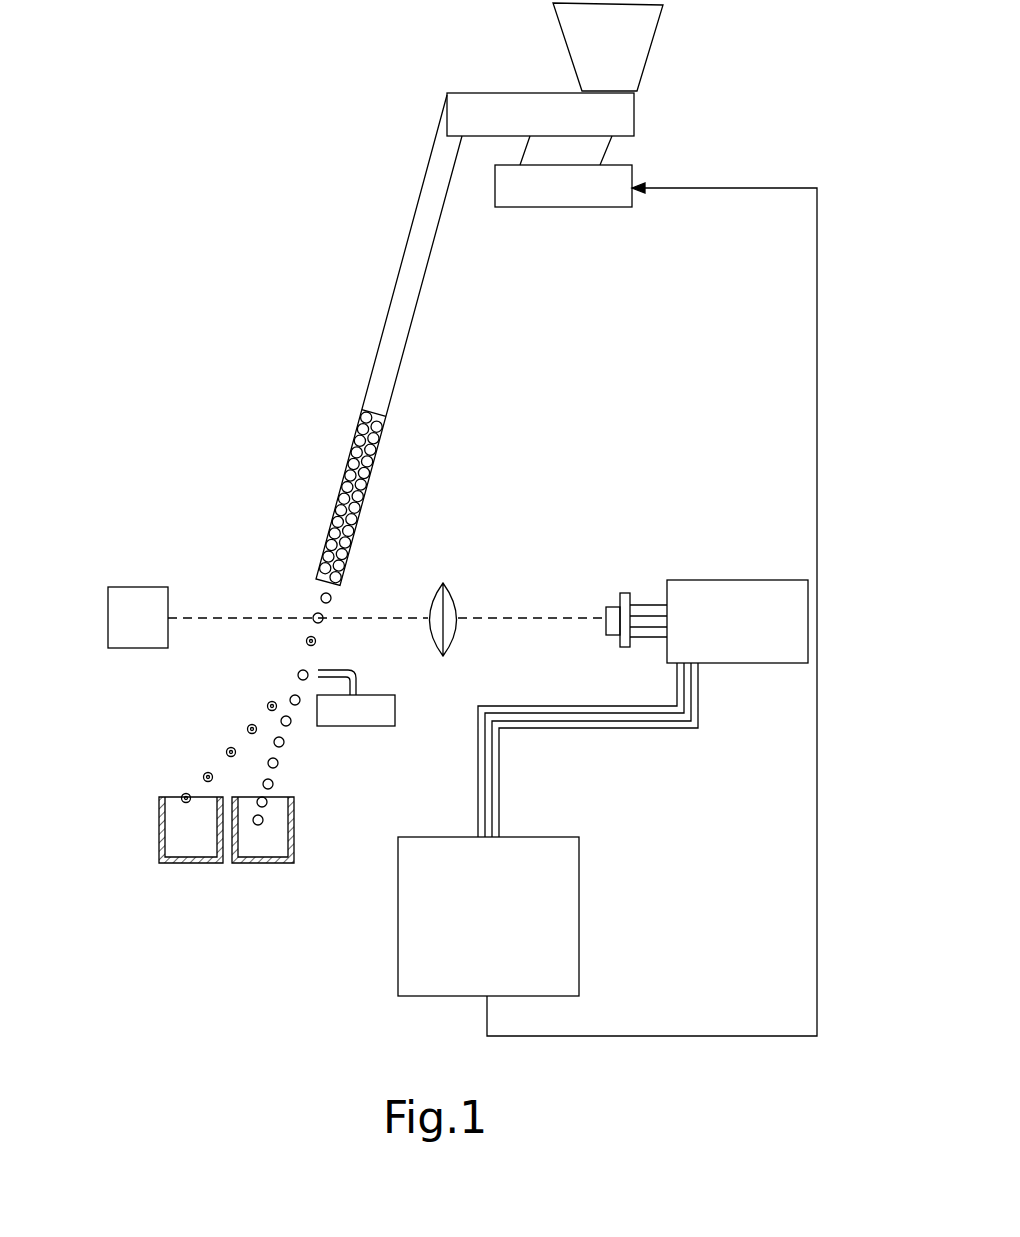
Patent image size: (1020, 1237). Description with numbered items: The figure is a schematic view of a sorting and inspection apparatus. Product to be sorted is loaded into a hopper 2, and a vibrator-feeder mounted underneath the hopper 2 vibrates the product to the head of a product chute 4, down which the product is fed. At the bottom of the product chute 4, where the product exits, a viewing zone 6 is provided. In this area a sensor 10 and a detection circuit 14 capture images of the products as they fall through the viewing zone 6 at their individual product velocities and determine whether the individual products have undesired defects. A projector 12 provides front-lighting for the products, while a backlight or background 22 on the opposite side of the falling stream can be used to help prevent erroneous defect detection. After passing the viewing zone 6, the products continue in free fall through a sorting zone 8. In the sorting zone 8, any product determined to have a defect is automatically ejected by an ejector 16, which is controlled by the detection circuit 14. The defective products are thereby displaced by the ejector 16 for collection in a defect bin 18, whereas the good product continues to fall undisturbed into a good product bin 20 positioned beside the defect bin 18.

The hopper 2 is at (528, 58).
The product chute 4 is at (399, 335).
The viewing zone 6 is at (301, 604).
The sorting zone 8 is at (290, 661).
The sensor 10 is at (649, 607).
The projector 12 is at (733, 607).
The detection circuit 14 is at (562, 928).
The ejector 16 is at (349, 673).
The defect bin 18 is at (190, 832).
The good product bin 20 is at (268, 833).
The backlight or background 22 is at (136, 606).